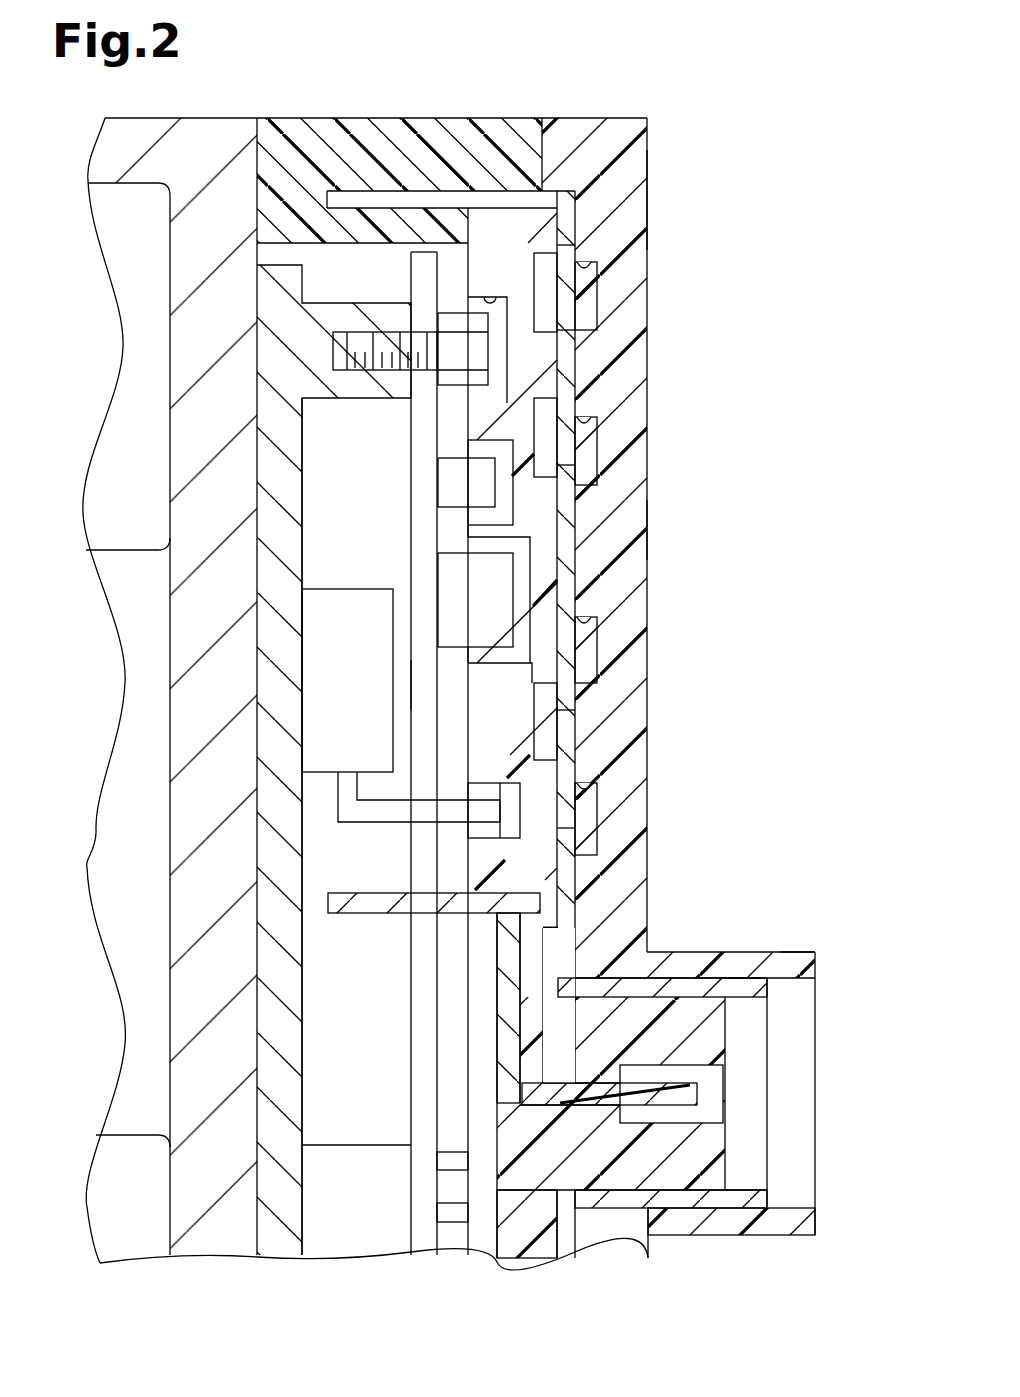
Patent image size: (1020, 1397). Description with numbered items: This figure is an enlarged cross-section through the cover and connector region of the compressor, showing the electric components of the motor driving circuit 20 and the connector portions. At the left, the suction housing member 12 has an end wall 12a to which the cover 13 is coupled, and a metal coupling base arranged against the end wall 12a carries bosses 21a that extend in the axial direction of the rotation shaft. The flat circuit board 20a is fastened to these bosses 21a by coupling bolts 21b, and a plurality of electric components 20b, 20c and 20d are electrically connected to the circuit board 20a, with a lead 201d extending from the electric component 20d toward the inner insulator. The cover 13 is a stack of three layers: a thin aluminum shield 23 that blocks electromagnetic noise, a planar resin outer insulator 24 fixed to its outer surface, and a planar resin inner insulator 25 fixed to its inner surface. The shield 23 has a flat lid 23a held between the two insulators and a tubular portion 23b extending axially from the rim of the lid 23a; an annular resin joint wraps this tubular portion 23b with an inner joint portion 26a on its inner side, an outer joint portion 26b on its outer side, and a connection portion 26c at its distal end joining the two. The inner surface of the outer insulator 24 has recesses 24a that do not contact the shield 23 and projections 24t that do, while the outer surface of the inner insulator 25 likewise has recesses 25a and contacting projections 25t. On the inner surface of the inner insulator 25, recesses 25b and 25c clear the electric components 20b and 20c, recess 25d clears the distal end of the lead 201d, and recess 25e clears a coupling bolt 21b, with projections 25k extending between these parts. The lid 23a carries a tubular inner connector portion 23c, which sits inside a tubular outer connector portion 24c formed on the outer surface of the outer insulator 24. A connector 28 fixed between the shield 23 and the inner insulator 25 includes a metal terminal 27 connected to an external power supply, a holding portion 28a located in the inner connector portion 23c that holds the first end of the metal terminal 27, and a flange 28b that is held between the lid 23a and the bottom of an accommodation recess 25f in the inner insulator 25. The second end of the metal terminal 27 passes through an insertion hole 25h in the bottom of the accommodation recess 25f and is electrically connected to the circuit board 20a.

The suction housing member 12 is at (157, 118).
The end wall 12a is at (187, 252).
The cover 13 is at (648, 118).
The motor driving circuit 20 is at (452, 258).
The circuit board 20a is at (425, 684).
The electric component 20b is at (450, 470).
The electric component 20c is at (457, 563).
The electric component 20d is at (338, 603).
The lead 201d is at (357, 814).
The boss 21a is at (353, 388).
The coupling bolt 21b is at (477, 353).
The shield 23 is at (582, 214).
The lid 23a is at (577, 521).
The tubular portion 23b is at (347, 190).
The inner connector portion 23c is at (747, 985).
The outer insulator 24 is at (618, 130).
The recess 24a is at (582, 270).
The outer connector portion 24c is at (803, 957).
The projection 24t is at (582, 227).
The inner insulator 25 is at (512, 1250).
The recess 25a is at (565, 330).
The recess 25b is at (483, 525).
The recess 25c is at (555, 660).
The recess 25d is at (488, 784).
The recess 25e is at (481, 295).
The accommodation recess 25f is at (543, 880).
The insertion hole 25h is at (477, 900).
The projection 25k is at (483, 417).
The projection 25t is at (547, 245).
The inner joint portion 26a is at (343, 240).
The outer joint portion 26b is at (427, 125).
The connection portion 26c is at (273, 204).
The metal terminal 27 is at (573, 1097).
The connector 28 is at (698, 1177).
The holding portion 28a is at (678, 1003).
The flange 28b is at (500, 963).